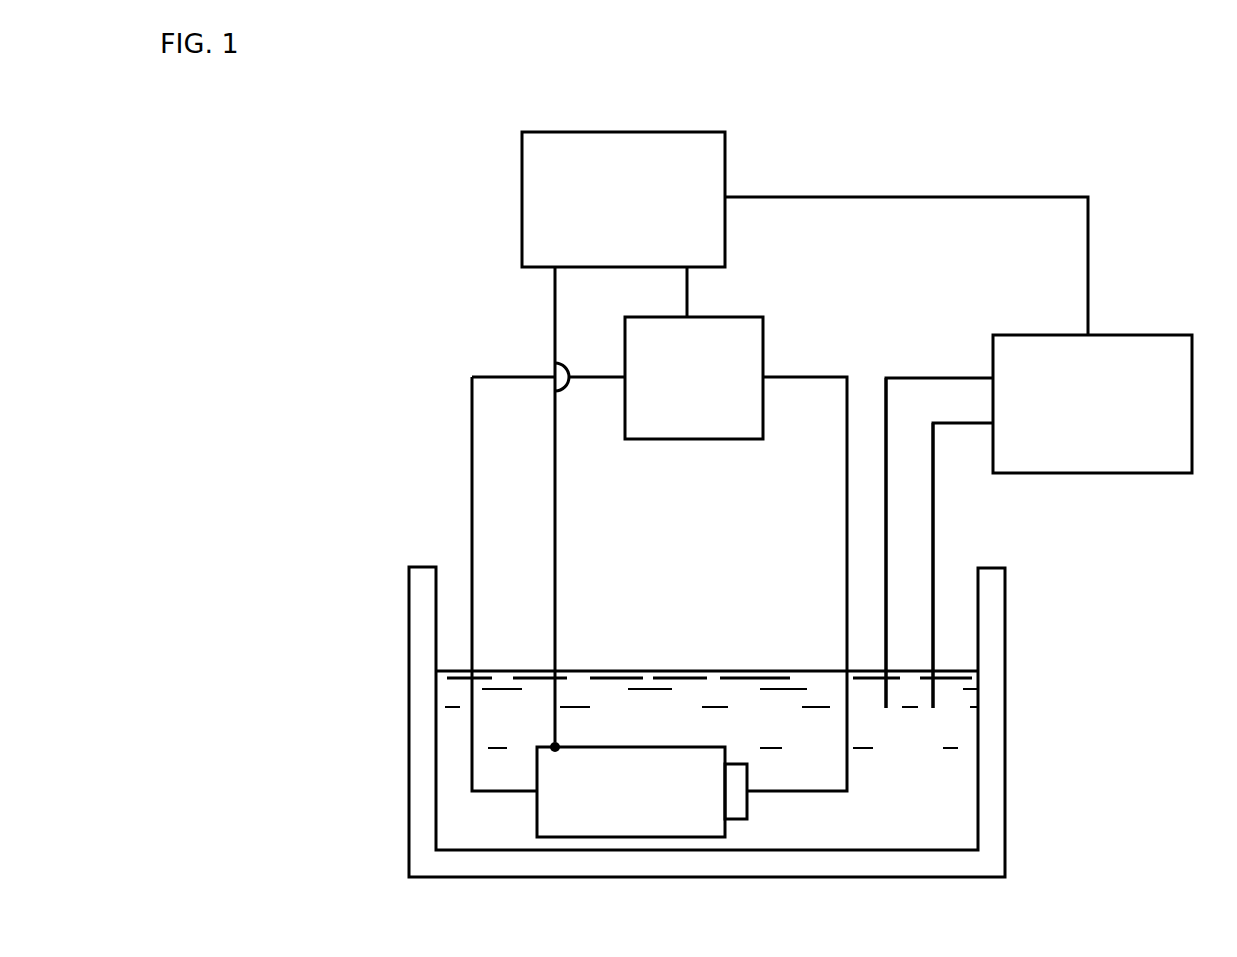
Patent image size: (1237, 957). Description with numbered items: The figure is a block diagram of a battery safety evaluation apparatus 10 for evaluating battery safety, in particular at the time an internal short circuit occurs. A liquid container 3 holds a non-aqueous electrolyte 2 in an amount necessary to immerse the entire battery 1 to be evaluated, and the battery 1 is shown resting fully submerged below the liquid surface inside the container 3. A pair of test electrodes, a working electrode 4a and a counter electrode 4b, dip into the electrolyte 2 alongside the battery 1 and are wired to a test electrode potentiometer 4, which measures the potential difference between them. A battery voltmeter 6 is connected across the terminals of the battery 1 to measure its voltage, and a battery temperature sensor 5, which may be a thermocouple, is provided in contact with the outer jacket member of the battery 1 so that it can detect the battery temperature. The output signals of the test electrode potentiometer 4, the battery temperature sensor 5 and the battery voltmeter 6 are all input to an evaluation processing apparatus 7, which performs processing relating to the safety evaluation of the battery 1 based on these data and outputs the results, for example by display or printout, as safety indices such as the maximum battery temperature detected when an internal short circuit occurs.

The evaluation apparatus 10 is at (1146, 176).
The evaluation processing apparatus 7 is at (711, 153).
The battery voltmeter 6 is at (760, 333).
The test electrode potentiometer 4 is at (1135, 346).
The working electrode 4a is at (888, 700).
The counter electrode 4b is at (935, 700).
The battery 1 is at (688, 760).
The battery temperature sensor 5 is at (558, 743).
The non-aqueous electrolyte 2 is at (923, 778).
The liquid container 3 is at (993, 835).